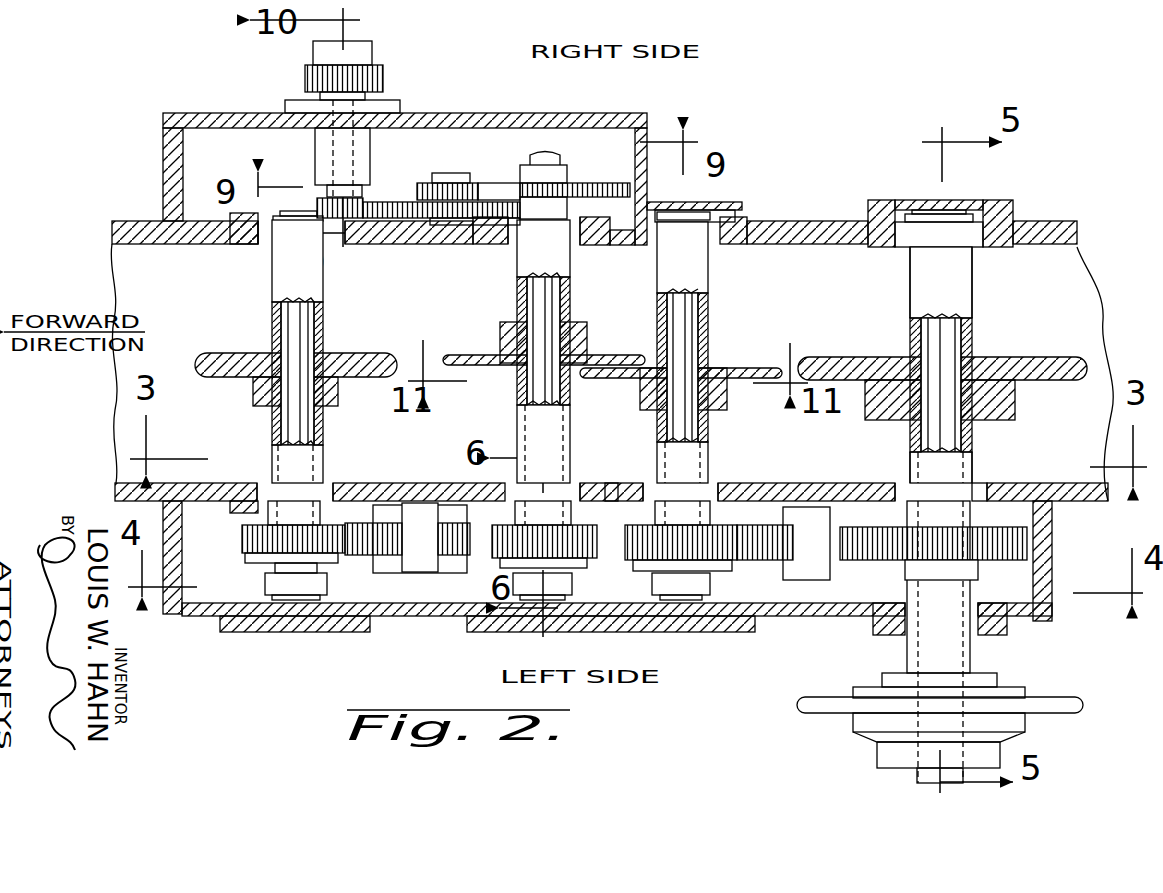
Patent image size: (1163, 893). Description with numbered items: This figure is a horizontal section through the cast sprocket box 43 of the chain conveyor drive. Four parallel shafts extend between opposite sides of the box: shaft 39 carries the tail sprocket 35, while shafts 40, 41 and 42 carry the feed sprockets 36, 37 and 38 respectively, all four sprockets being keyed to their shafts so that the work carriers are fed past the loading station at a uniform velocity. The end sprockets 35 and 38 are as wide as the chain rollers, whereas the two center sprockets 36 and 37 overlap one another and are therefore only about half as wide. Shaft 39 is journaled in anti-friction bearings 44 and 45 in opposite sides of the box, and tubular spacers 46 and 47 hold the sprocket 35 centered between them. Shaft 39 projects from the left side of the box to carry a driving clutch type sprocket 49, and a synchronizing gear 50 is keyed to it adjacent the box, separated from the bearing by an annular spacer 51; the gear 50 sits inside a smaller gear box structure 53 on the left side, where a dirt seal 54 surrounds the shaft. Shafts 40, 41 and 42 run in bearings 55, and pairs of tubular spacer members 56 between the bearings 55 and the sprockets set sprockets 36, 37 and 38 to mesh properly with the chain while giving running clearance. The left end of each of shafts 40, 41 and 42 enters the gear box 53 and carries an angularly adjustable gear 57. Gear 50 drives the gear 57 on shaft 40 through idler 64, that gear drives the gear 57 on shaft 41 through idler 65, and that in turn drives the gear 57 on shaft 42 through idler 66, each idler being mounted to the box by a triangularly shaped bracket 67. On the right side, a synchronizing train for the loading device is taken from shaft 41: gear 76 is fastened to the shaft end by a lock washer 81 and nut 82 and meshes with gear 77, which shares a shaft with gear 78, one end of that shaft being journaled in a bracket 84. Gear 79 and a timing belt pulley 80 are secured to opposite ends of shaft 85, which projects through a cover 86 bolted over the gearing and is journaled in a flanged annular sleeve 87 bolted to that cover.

The tail sprocket 35 is at (1035, 357).
The feed sprocket 36 is at (757, 368).
The feed sprocket 37 is at (610, 355).
The feed sprocket 38 is at (370, 353).
The shaft 39 is at (975, 437).
The shaft 40 is at (708, 430).
The shaft 41 is at (570, 395).
The shaft 42 is at (323, 428).
The sprocket box 43 is at (800, 221).
The anti-friction bearing 44 is at (903, 486).
The anti-friction bearing 45 is at (905, 247).
The tubular spacer 46 is at (908, 460).
The tubular spacer 47 is at (975, 302).
The driving clutch type sprocket 49 is at (1065, 700).
The synchronizing gear 50 is at (1020, 568).
The annular spacer 51 is at (990, 490).
The gear box structure 53 is at (1052, 542).
The dirt seal 54 is at (985, 635).
The bearing 55 is at (260, 246).
The tubular spacer member 56 is at (323, 306).
The gear 57 is at (245, 553).
The idler 64 is at (758, 560).
The idler 65 is at (612, 495).
The idler 66 is at (362, 555).
The triangularly shaped bracket 67 is at (430, 616).
The gear 76 is at (590, 190).
The gear 77 is at (425, 183).
The gear 78 is at (383, 244).
The gear 79 is at (320, 198).
The timing belt pulley 80 is at (383, 76).
The lock washer 81 is at (560, 183).
The nut 82 is at (546, 152).
The bracket 84 is at (478, 185).
The shaft 85 is at (318, 95).
The cover 86 is at (200, 113).
The flanged annular sleeve 87 is at (315, 142).